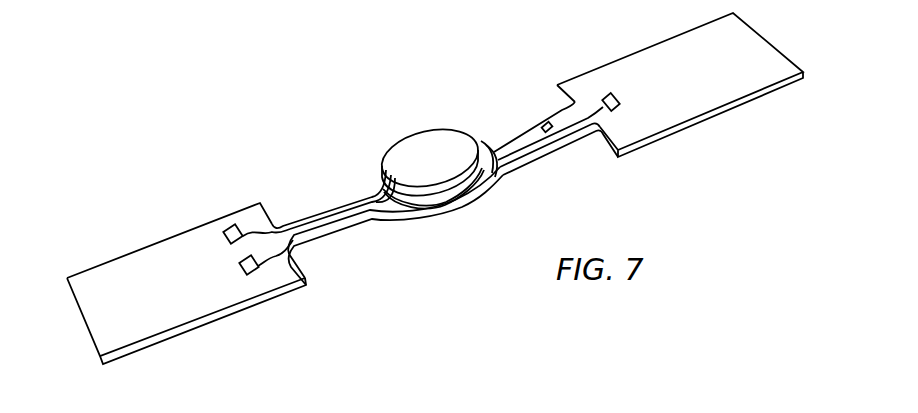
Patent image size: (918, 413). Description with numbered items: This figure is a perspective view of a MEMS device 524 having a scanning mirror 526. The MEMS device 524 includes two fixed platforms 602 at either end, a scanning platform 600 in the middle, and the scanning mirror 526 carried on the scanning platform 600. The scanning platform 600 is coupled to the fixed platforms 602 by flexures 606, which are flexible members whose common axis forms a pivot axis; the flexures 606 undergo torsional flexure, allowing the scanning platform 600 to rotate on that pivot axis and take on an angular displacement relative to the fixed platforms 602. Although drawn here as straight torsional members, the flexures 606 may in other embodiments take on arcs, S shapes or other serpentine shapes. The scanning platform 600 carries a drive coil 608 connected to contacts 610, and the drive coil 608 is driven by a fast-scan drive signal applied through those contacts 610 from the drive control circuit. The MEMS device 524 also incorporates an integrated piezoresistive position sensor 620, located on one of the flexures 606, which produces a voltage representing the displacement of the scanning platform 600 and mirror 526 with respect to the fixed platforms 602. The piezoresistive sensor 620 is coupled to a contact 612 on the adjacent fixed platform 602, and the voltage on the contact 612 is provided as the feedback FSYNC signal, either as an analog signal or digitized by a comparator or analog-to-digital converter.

The MEMS device 524 is at (234, 77).
The scanning mirror 526 is at (417, 148).
The scanning platform 600 is at (462, 208).
The fixed platforms 602 is at (157, 242).
The flexures 606 is at (348, 229).
The drive coil 608 is at (494, 145).
The contacts 610 is at (240, 264).
The contact 612 is at (620, 100).
The piezoresistive sensor 620 is at (542, 123).